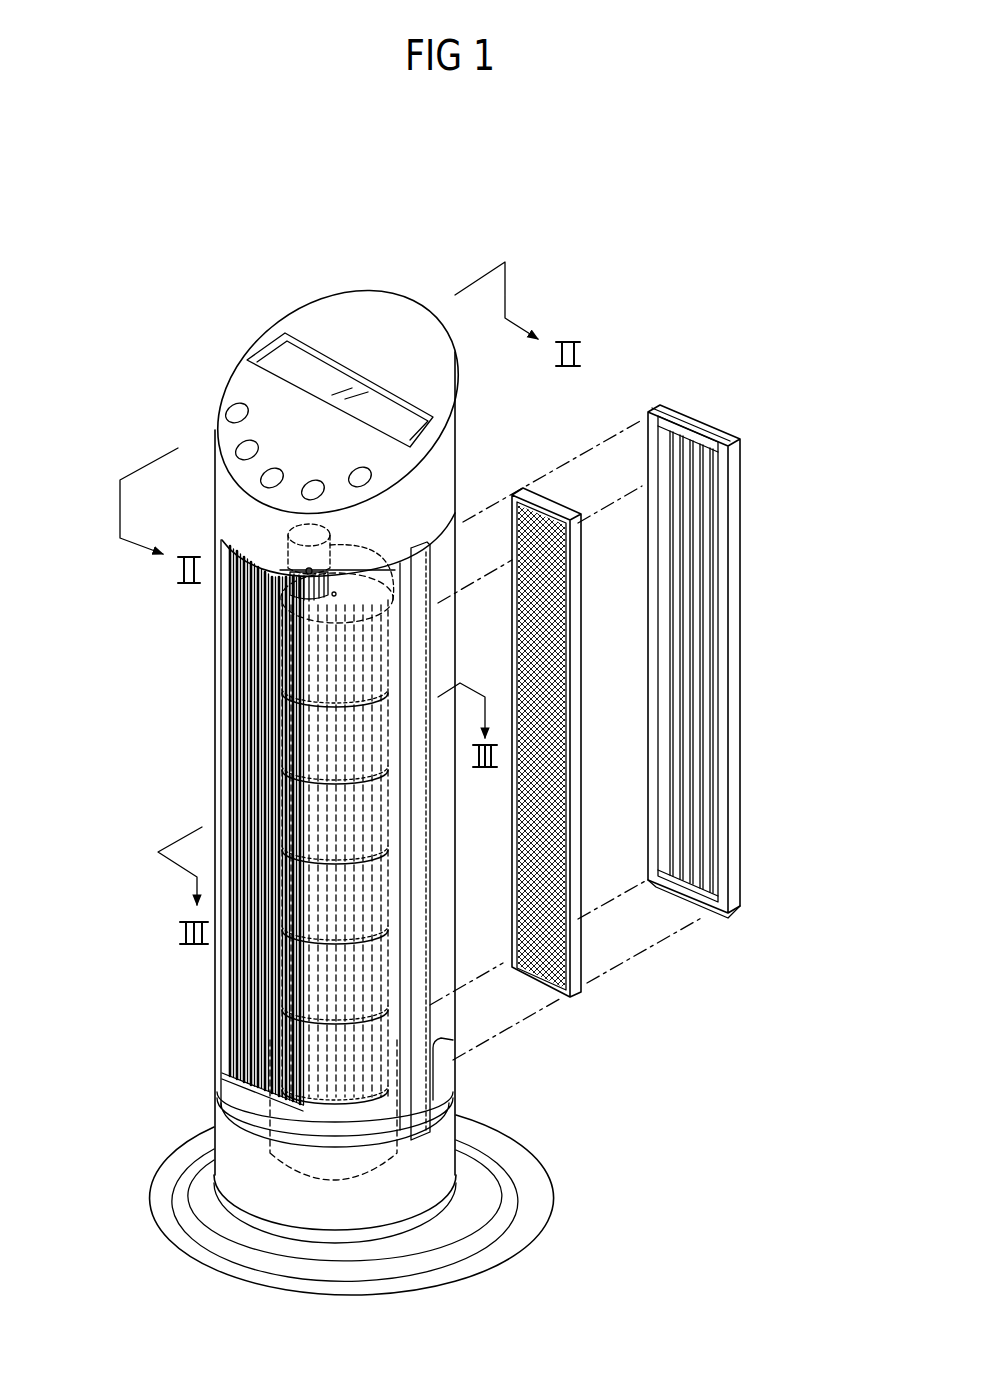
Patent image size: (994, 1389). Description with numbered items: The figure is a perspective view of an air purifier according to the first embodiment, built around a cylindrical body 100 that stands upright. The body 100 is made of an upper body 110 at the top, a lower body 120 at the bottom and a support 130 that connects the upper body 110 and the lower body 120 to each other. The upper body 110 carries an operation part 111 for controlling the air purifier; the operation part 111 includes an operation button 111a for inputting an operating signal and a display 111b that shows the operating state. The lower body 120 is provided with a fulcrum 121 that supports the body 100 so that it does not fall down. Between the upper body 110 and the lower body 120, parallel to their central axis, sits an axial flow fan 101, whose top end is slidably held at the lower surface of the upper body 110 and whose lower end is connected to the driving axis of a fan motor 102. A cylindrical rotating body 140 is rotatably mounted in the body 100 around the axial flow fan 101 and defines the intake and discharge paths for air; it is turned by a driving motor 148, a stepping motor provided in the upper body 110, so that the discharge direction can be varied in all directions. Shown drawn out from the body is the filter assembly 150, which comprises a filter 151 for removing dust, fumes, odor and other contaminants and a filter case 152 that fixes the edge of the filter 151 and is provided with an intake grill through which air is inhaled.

The body 100 is at (188, 363).
The axial flow fan 101 is at (330, 803).
The fan motor 102 is at (355, 1160).
The upper body 110 is at (445, 470).
The operation part 111 is at (281, 393).
The operation button 111a is at (248, 449).
The display 111b is at (348, 380).
The lower body 120 is at (446, 1143).
The fulcrum 121 is at (205, 1248).
The support 130 is at (218, 1005).
The rotating body 140 is at (324, 719).
The driving motor 148 is at (333, 547).
The filter assembly 150 is at (667, 960).
The filter 151 is at (575, 797).
The filter case 152 is at (735, 778).